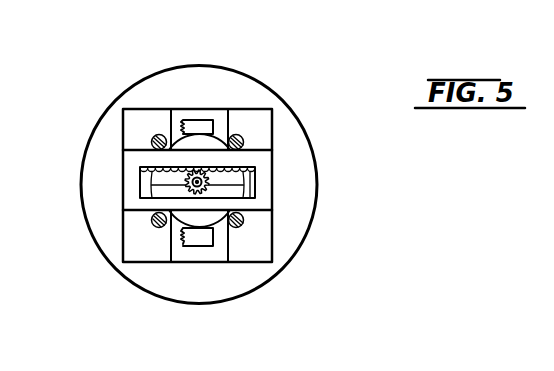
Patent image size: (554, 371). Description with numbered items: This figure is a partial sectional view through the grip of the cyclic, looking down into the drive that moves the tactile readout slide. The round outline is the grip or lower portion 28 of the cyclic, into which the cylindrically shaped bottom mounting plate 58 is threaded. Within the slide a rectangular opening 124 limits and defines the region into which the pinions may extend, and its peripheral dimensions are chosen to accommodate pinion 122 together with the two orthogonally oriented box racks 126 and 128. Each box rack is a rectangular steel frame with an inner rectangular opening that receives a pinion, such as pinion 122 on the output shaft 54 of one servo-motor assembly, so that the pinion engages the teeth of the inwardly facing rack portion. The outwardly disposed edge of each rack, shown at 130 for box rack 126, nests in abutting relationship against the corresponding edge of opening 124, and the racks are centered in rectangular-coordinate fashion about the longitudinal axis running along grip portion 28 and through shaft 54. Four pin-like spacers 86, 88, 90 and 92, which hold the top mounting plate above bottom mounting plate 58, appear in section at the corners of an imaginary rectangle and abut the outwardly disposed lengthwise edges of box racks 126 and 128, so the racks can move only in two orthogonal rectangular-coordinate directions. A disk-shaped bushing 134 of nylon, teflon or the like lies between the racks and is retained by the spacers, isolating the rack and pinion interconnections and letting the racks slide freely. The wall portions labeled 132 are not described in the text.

The lower portion 28 is at (132, 285).
The shaft 54 is at (193, 171).
The bottom mounting plate 58 is at (255, 247).
The pin-like spacer 86 is at (241, 138).
The pin-like spacer 88 is at (242, 219).
The pin-like spacer 90 is at (152, 220).
The pin-like spacer 92 is at (155, 138).
The pinion 122 is at (140, 185).
The rectangular opening 124 is at (138, 248).
The box rack 126 is at (214, 254).
The box rack 128 is at (264, 168).
The outwardly disposed edge 130 is at (206, 122).
The guide wall 132 is at (123, 163).
The disk-shaped bushing 134 is at (192, 120).